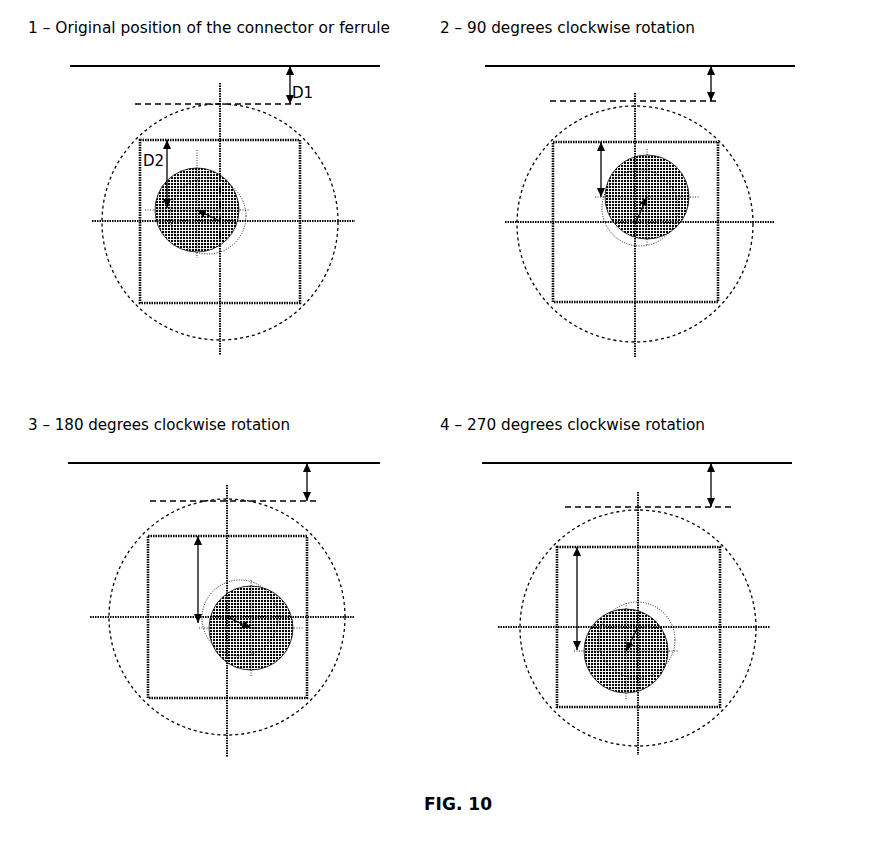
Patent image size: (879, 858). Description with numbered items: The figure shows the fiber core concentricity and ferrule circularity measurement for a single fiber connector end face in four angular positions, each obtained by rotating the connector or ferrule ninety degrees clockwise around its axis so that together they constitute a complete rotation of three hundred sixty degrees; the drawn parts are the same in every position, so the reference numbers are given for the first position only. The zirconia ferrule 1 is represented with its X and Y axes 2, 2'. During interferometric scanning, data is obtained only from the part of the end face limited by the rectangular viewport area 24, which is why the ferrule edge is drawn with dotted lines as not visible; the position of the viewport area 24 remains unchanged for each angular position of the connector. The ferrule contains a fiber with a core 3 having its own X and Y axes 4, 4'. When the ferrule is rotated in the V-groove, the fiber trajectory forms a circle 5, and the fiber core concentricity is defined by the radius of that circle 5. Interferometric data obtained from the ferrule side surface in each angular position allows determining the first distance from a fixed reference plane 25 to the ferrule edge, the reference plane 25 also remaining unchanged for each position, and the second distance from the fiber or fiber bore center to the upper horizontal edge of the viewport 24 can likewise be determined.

The zirconia ferrule 1 is at (300, 132).
The X axis 2 is at (257, 248).
The Y axis 2' is at (283, 222).
The core 3 is at (166, 244).
The X axis 4 is at (264, 195).
The Y axis 4' is at (273, 200).
The circle 5 is at (243, 238).
The rectangular viewport area 24 is at (140, 288).
The reference plane 25 is at (330, 66).